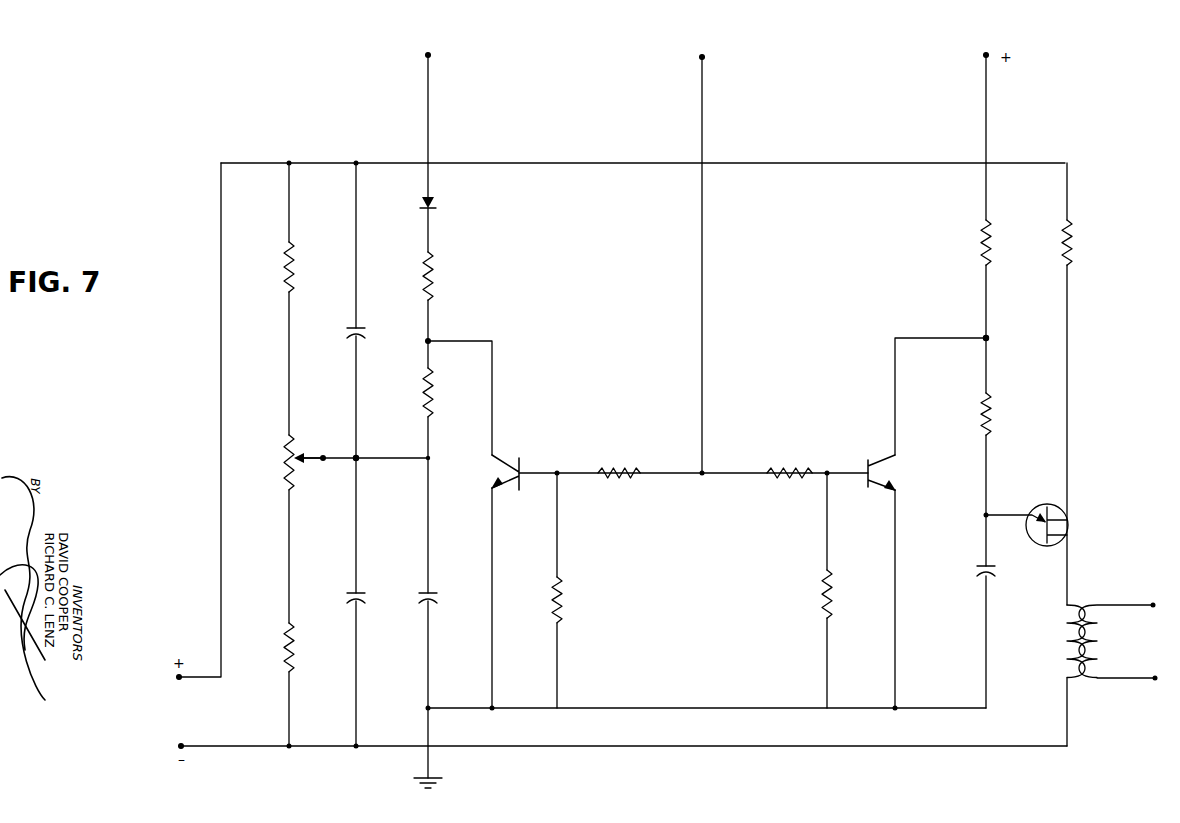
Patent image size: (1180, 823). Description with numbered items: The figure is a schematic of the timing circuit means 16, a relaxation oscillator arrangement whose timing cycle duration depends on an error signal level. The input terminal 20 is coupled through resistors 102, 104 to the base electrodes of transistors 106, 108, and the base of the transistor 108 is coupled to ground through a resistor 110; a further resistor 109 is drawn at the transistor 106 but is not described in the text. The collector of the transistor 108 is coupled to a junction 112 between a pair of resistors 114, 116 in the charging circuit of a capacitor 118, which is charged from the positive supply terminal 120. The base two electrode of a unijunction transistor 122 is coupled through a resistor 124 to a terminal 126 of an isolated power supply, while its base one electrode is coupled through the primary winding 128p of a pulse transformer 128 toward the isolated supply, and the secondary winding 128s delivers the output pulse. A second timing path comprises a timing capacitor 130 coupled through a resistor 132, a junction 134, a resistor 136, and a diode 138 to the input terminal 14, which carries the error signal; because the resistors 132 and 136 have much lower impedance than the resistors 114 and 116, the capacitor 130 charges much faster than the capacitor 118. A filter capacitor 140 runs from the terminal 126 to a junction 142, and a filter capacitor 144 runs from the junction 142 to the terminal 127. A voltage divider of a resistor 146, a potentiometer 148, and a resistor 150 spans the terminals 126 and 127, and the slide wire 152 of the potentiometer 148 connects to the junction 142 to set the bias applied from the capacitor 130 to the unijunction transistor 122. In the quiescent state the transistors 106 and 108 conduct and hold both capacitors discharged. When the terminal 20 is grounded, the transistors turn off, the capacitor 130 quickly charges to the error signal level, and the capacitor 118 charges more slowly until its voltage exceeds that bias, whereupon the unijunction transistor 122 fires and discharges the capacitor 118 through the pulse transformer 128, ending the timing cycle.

The input terminal 14 is at (434, 58).
The timing circuit means 16 is at (758, 336).
The input terminal 20 is at (706, 60).
The resistor 102 is at (622, 462).
The resistor 104 is at (796, 462).
The transistor 106 is at (510, 446).
The transistor 108 is at (882, 448).
The resistor 109 is at (566, 600).
The resistor 110 is at (820, 594).
The junction 112 is at (988, 337).
The resistor 114 is at (974, 248).
The resistor 116 is at (996, 402).
The capacitor 118 is at (972, 571).
The terminal 120 is at (980, 54).
The unijunction transistor 122 is at (1040, 504).
The resistor 124 is at (1080, 238).
The terminal 126 is at (180, 680).
The terminal 127 is at (192, 727).
The pulse transformer 128 is at (1092, 598).
The primary winding 128p is at (1054, 644).
The secondary winding 128s is at (1108, 649).
The timing capacitor 130 is at (436, 596).
The resistor 132 is at (438, 388).
The junction 134 is at (432, 336).
The resistor 136 is at (440, 276).
The diode 138 is at (440, 207).
The filter capacitor 140 is at (364, 326).
The junction 142 is at (360, 452).
The filter capacitor 144 is at (364, 594).
The resistor 146 is at (282, 266).
The potentiometer 148 is at (284, 461).
The resistor 150 is at (300, 658).
The slide wire 152 is at (308, 443).